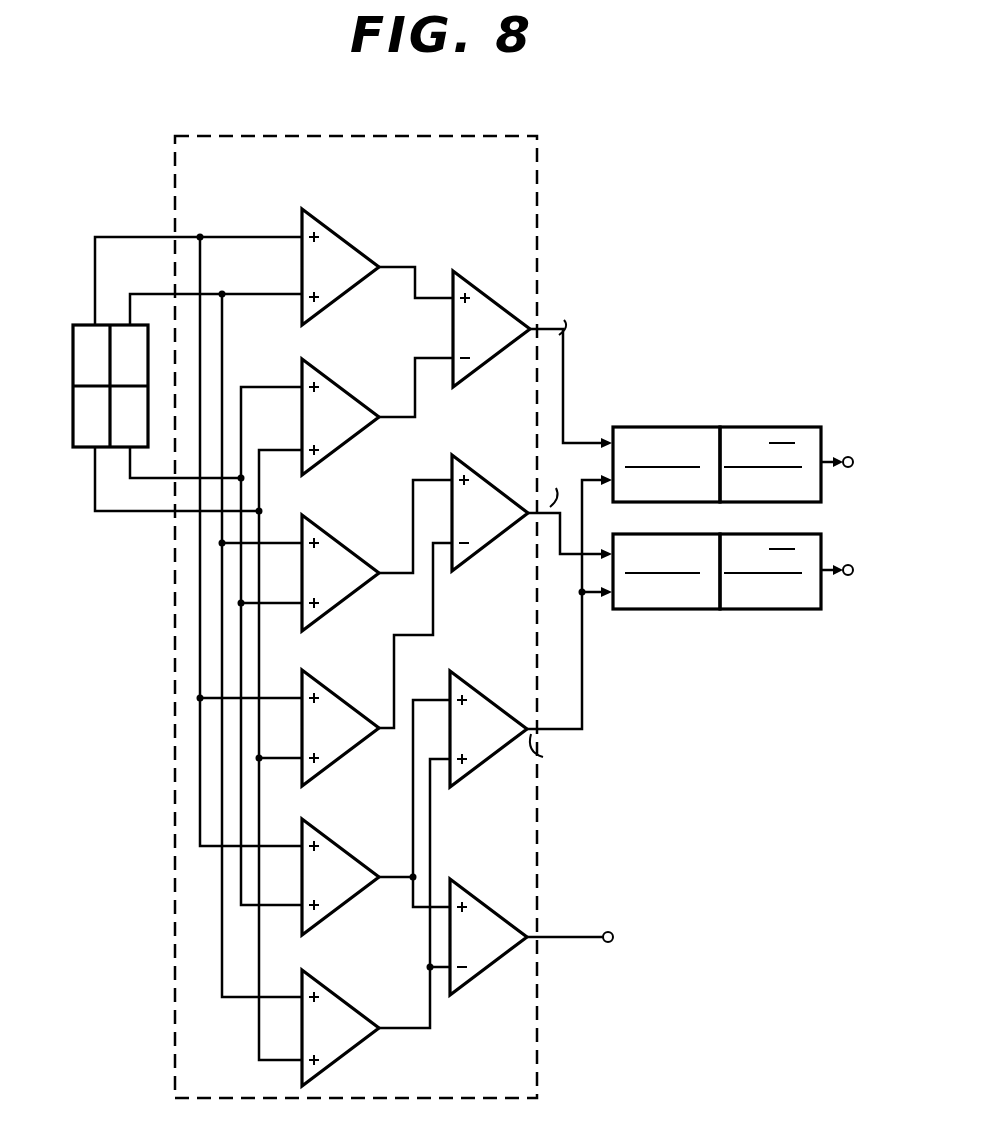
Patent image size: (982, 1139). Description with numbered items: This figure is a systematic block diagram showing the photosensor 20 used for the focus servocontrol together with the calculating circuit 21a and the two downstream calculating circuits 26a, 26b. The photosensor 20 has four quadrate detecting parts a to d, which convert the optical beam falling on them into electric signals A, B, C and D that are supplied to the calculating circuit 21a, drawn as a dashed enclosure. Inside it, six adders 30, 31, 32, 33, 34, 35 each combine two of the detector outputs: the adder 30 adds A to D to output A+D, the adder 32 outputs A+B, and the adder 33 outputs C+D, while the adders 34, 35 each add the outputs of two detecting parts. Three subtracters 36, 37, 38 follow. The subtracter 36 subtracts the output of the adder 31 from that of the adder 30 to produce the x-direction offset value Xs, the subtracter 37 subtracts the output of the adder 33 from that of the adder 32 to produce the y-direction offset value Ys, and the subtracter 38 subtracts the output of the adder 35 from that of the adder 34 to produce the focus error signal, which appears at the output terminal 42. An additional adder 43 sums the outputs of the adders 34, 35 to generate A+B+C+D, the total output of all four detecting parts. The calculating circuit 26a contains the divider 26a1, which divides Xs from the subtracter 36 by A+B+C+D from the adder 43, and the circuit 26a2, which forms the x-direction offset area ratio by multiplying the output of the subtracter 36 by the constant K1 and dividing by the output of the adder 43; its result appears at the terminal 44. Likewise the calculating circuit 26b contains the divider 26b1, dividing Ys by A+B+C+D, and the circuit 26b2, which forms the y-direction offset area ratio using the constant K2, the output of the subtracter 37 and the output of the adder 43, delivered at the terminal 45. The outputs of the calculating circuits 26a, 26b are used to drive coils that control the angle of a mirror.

The photosensor 20 is at (87, 323).
The calculating circuit 21a is at (540, 247).
The adder 30 is at (357, 249).
The adder 31 is at (356, 400).
The adder 32 is at (352, 550).
The adder 33 is at (353, 705).
The adder 34 is at (353, 855).
The adder 35 is at (353, 1006).
The subtracter 36 is at (488, 296).
The subtracter 37 is at (490, 483).
The subtracter 38 is at (490, 910).
The output terminal for (A+C)-(B+D) 42 is at (606, 931).
The adder 43 is at (490, 699).
The output terminal 44 is at (848, 456).
The output terminal 45 is at (848, 563).
The calculating circuit 26a is at (717, 419).
The divider 26a1 is at (642, 427).
The circuit 26a2 is at (708, 368).
The calculating circuit 26b is at (719, 615).
The divider 26b1 is at (659, 611).
The circuit 26b2 is at (716, 618).